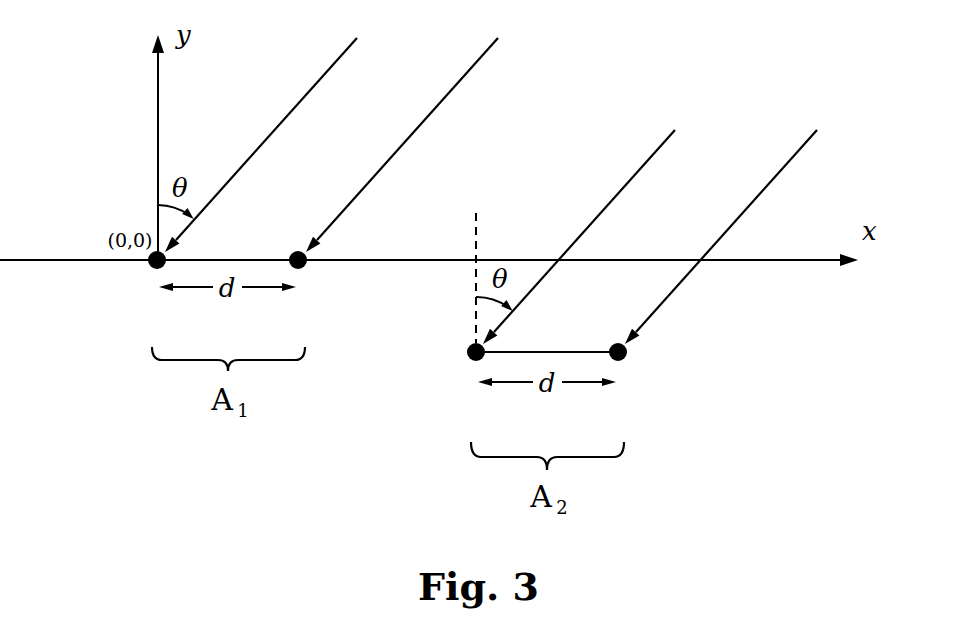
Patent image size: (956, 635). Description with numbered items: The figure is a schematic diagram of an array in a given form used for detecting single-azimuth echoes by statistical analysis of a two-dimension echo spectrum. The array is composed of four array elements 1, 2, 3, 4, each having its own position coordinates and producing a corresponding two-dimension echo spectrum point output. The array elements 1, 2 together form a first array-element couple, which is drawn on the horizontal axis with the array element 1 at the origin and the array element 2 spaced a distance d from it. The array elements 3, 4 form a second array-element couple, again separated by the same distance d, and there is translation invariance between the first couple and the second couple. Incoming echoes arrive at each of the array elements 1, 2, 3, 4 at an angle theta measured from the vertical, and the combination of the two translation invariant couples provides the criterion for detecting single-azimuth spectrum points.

The array element 1 is at (157, 269).
The array element 2 is at (298, 269).
The array element 3 is at (476, 361).
The array element 4 is at (618, 361).